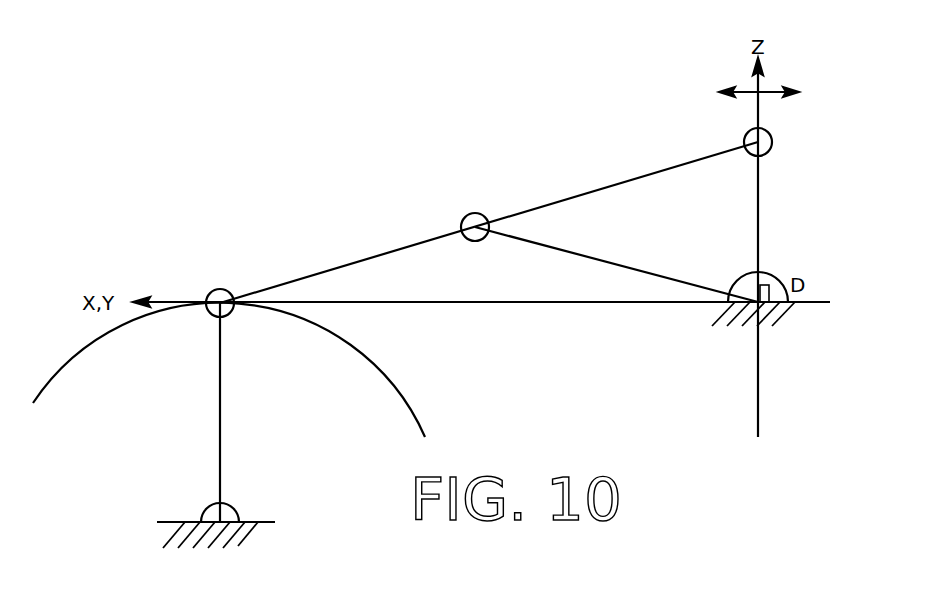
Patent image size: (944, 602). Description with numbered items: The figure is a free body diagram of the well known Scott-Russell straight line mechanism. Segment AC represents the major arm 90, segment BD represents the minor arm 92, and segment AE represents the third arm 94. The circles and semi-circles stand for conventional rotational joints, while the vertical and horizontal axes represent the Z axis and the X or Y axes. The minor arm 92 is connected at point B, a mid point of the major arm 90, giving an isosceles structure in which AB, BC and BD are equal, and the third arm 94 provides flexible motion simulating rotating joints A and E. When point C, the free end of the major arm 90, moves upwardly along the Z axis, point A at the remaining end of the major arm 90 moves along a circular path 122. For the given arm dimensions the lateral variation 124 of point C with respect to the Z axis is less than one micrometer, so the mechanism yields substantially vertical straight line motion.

The major arm 90 is at (654, 154).
The minor arm 92 is at (654, 275).
The third arm 94 is at (220, 447).
The circular path 122 is at (400, 395).
The lateral variation 124 is at (775, 92).